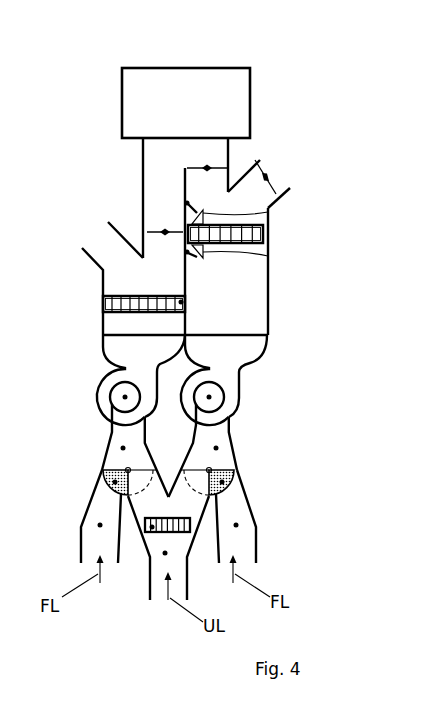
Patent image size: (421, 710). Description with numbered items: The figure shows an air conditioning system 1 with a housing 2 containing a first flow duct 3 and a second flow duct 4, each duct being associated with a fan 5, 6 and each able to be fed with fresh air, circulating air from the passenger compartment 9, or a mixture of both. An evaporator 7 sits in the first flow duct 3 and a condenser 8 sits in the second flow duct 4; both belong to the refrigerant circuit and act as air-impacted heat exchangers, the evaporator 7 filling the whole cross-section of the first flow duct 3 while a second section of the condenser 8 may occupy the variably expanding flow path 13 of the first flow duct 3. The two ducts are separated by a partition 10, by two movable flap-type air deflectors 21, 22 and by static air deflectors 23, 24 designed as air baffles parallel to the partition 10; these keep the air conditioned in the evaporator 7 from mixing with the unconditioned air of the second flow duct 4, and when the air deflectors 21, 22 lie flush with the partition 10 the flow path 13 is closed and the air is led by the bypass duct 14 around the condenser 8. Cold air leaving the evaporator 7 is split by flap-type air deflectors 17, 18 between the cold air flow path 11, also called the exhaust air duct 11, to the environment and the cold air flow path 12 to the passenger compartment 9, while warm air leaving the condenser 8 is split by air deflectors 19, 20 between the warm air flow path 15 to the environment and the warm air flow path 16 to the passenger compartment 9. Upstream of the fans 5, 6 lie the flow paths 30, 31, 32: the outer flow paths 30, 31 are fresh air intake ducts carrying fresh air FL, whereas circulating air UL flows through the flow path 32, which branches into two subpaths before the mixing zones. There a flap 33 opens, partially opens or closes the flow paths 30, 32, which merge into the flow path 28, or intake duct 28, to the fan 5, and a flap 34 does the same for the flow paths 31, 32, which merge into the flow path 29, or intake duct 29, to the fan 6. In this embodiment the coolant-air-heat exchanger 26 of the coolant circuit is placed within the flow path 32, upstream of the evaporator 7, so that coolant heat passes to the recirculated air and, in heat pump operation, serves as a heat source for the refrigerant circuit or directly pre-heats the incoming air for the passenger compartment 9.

The air conditioning system 1 is at (306, 103).
The housing 2 is at (143, 160).
The first flow duct 3 is at (133, 182).
The second flow duct 4 is at (278, 287).
The fan 5 is at (125, 397).
The fan 6 is at (209, 397).
The evaporator 7 is at (188, 308).
The condenser 8 is at (268, 230).
The passenger compartment 9 is at (197, 113).
The partition 10 is at (183, 302).
The cold air flow path 11 is at (103, 241).
The cold air flow path 12 is at (177, 188).
The flow path 13 is at (185, 251).
The bypass duct 14 is at (177, 225).
The warm air flow path 15 is at (297, 179).
The warm air flow path 16 is at (217, 165).
The air deflector 17 is at (112, 241).
The air deflector 18 is at (146, 230).
The air deflector 19 is at (265, 199).
The air deflector 20 is at (226, 166).
The air deflector 21 is at (191, 255).
The air deflector 22 is at (188, 204).
The static air deflector 23 is at (268, 256).
The static air deflector 24 is at (268, 212).
The coolant-air-heat exchanger 26 is at (150, 527).
The flow path 28 is at (123, 448).
The flow path 29 is at (216, 448).
The flow path 30 is at (100, 525).
The flow path 31 is at (236, 525).
The flow path 32 is at (165, 553).
The air deflector 33 is at (115, 482).
The air deflector 34 is at (222, 482).